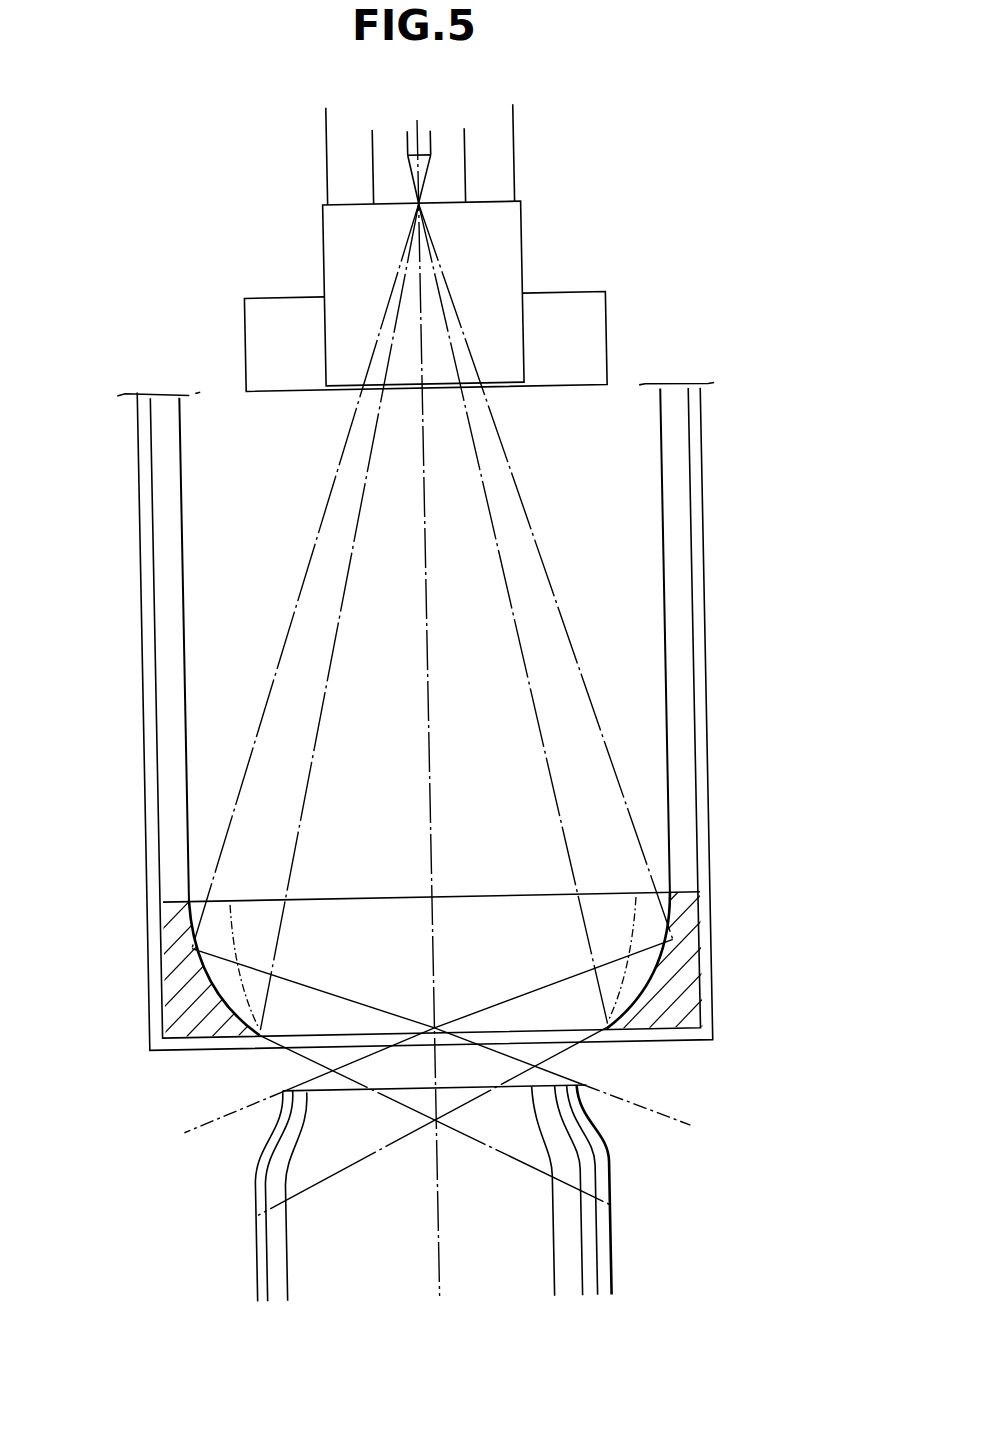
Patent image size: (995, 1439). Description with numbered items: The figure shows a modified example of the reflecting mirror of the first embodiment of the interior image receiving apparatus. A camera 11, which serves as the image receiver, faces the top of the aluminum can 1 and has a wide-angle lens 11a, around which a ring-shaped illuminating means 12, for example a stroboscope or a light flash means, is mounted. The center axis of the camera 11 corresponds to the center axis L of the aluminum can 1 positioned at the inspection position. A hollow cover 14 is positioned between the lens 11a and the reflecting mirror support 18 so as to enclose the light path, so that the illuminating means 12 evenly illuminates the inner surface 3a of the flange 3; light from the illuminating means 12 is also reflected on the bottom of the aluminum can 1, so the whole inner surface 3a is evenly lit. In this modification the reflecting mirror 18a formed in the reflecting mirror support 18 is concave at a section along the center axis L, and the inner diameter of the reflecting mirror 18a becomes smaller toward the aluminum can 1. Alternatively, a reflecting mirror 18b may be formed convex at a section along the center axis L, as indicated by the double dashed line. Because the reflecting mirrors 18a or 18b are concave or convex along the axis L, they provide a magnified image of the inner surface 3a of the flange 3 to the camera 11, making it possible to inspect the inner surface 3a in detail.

The aluminum can 1 is at (493, 1191).
The flange 3 is at (583, 1123).
The inner surface of the flange 3a is at (286, 1117).
The camera 11 is at (386, 168).
The wide-angle lens 11a is at (537, 234).
The illuminating means 12 is at (618, 328).
The hollow cover 14 is at (142, 634).
The reflecting mirror support 18 is at (432, 935).
The reflecting mirror 18a is at (226, 981).
The reflecting mirror 18b is at (230, 901).
The center axis L is at (433, 1250).